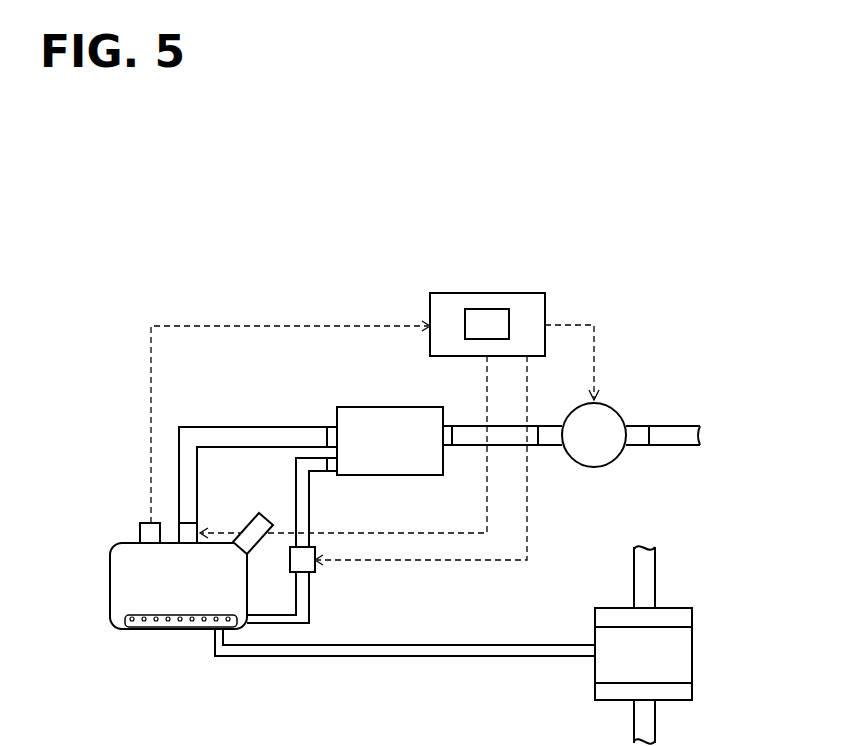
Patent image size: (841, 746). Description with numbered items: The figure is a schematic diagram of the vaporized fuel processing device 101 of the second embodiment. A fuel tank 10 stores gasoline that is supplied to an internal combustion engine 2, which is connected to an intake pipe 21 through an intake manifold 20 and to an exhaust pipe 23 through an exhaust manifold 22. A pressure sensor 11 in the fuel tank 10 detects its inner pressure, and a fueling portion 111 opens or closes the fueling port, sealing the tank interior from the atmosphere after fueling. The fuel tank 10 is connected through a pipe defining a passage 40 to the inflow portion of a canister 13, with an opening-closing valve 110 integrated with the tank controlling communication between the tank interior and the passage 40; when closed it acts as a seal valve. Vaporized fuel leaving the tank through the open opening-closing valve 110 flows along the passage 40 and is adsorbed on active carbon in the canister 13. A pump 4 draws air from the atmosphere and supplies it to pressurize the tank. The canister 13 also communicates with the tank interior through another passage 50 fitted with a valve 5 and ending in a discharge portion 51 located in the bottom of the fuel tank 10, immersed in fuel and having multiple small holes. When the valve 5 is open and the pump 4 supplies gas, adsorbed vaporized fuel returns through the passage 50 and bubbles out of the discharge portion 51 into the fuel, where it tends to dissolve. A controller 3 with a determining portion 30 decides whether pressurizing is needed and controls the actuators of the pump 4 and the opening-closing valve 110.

The vaporized fuel processing device 101 is at (630, 300).
The controller 3 is at (447, 293).
The determining portion 30 is at (490, 309).
The pump 4 is at (617, 404).
The canister 13 is at (362, 407).
The passage 40 is at (230, 427).
The opening-closing valve 110 is at (178, 533).
The pressure sensor 11 is at (140, 530).
The fuel tank 10 is at (110, 605).
The fueling portion 111 is at (264, 513).
The discharge portion 51 is at (170, 627).
The passage 50 is at (311, 612).
The valve 5 is at (315, 570).
The internal combustion engine 2 is at (692, 650).
The intake manifold 20 is at (692, 614).
The intake pipe 21 is at (655, 583).
The exhaust manifold 22 is at (692, 688).
The exhaust pipe 23 is at (655, 718).